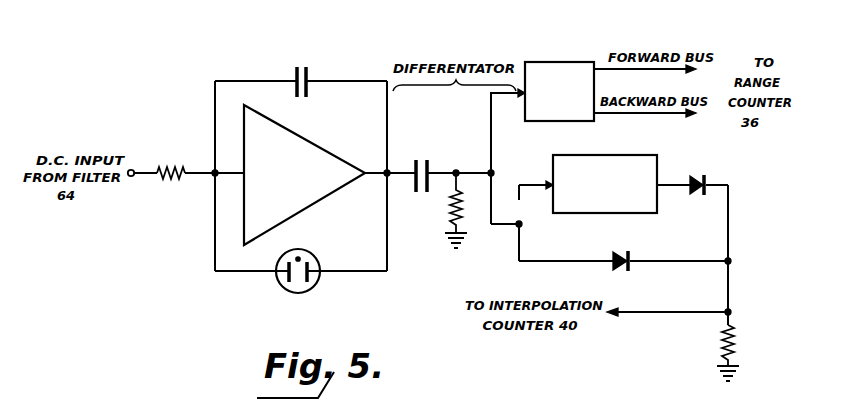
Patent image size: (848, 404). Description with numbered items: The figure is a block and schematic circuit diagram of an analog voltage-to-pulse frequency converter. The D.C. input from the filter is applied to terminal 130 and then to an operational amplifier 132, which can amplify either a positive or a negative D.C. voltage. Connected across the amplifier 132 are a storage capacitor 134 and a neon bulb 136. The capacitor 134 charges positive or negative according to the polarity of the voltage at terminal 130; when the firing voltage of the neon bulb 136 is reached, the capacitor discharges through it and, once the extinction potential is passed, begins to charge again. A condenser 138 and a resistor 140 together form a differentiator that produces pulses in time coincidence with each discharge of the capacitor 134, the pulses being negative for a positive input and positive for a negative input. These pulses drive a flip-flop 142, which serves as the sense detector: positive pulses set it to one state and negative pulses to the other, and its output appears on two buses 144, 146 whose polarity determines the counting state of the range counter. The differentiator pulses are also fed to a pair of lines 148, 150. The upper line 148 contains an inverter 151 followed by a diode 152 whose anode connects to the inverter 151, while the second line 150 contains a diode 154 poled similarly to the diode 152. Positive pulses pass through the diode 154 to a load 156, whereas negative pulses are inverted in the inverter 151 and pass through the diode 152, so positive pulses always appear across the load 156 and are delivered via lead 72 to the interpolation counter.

The terminal 130 is at (133, 170).
The operational amplifier 132 is at (345, 124).
The storage capacitor 134 is at (309, 72).
The neon bulb 136 is at (316, 256).
The condenser 138 is at (428, 166).
The resistor 140 is at (448, 207).
The flip-flop 142 is at (557, 60).
The bus 144 is at (629, 72).
The bus 146 is at (622, 115).
The line 148 is at (518, 187).
The line 150 is at (517, 249).
The inverter 151 is at (657, 155).
The diode 152 is at (705, 176).
The diode 154 is at (616, 250).
The load 156 is at (734, 346).
The lead 72 is at (693, 289).